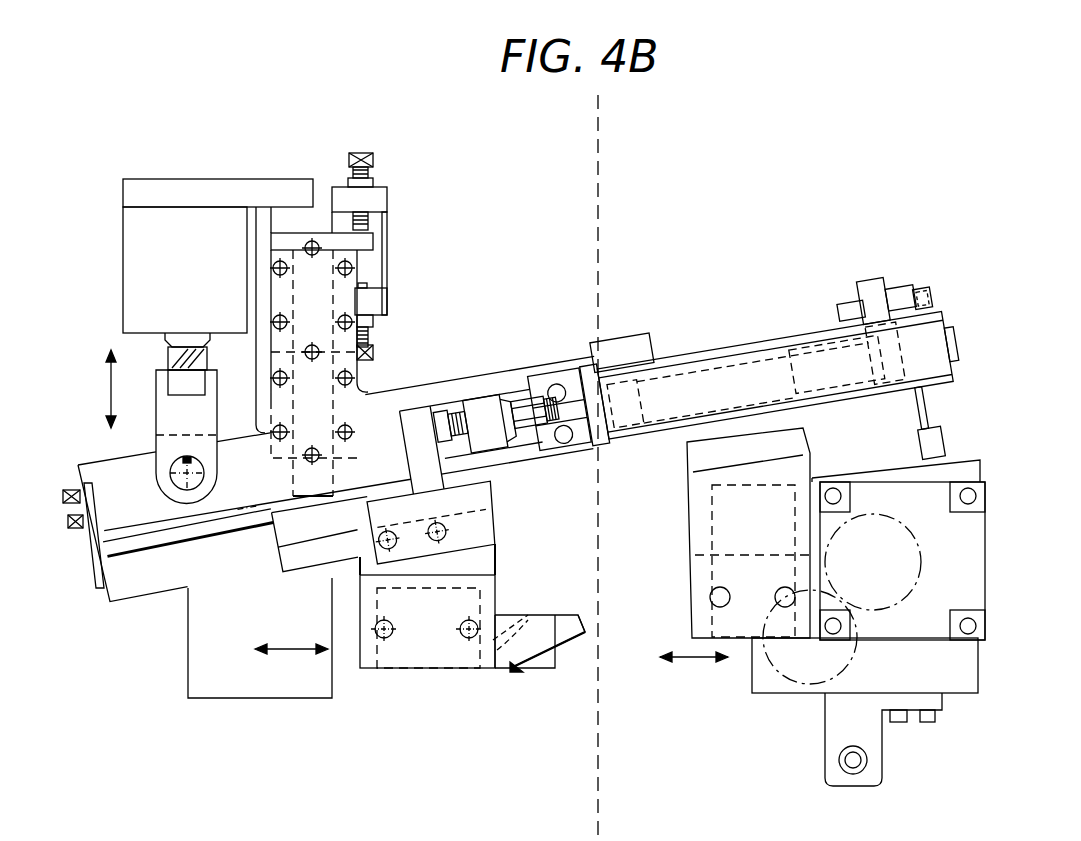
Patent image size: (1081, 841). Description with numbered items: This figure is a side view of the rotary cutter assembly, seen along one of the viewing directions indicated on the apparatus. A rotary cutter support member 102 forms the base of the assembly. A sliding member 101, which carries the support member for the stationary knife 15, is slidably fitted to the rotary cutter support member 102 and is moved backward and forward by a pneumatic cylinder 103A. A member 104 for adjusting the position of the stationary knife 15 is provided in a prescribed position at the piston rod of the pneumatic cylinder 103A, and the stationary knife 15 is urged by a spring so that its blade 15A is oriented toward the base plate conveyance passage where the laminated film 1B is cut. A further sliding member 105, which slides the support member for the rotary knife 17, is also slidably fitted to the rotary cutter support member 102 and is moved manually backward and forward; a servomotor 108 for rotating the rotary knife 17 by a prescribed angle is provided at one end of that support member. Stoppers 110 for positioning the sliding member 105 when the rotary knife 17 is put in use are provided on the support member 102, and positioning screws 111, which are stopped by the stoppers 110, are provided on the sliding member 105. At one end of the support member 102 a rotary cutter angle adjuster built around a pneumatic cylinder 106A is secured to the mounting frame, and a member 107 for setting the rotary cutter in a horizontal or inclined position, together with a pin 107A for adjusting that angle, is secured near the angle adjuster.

The laminated film 1B is at (603, 122).
The stationary knife 15 is at (505, 668).
The blade 15A is at (580, 632).
The rotary knife 17 is at (783, 663).
The sliding member 101 is at (447, 670).
The rotary cutter support member 102 is at (468, 383).
The pneumatic cylinder 103A is at (945, 313).
The member for adjusting the position of the stationary knife 104 is at (484, 402).
The sliding member 105 is at (980, 662).
The pneumatic cylinder 106A is at (126, 246).
The member for setting the angle of the rotary cutter 107 is at (385, 202).
The pin 107A is at (374, 160).
The servomotor 108 is at (988, 538).
The stopper 110 is at (636, 333).
The positioning screw 111 is at (935, 290).